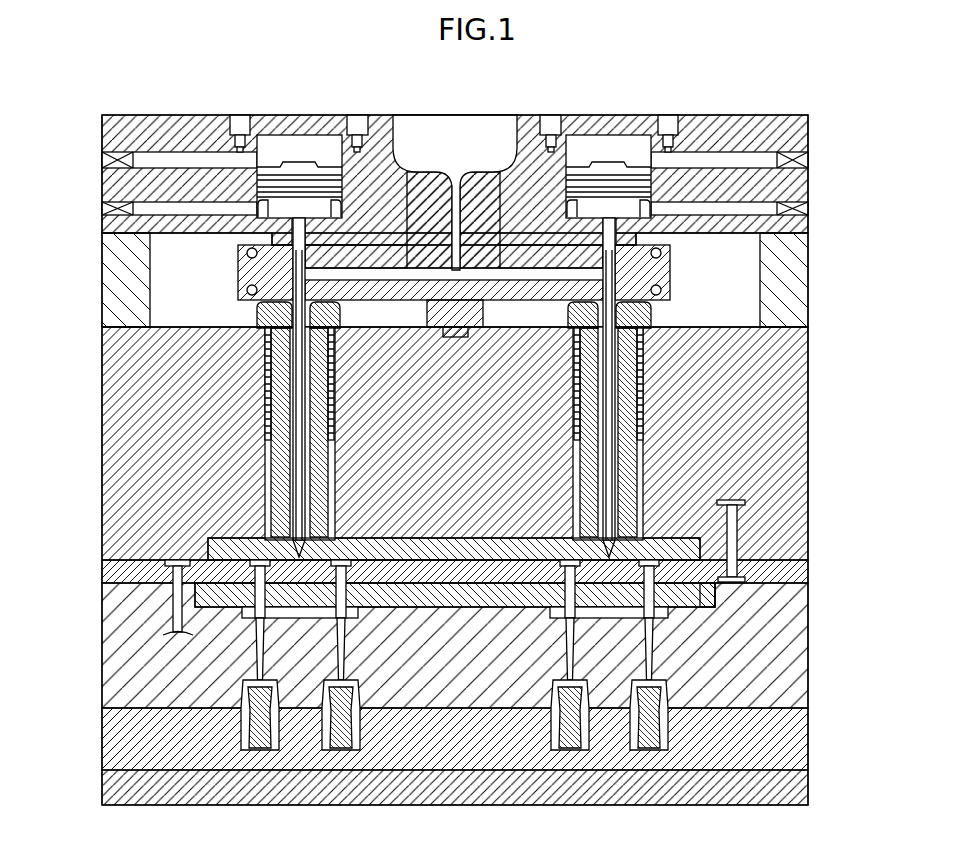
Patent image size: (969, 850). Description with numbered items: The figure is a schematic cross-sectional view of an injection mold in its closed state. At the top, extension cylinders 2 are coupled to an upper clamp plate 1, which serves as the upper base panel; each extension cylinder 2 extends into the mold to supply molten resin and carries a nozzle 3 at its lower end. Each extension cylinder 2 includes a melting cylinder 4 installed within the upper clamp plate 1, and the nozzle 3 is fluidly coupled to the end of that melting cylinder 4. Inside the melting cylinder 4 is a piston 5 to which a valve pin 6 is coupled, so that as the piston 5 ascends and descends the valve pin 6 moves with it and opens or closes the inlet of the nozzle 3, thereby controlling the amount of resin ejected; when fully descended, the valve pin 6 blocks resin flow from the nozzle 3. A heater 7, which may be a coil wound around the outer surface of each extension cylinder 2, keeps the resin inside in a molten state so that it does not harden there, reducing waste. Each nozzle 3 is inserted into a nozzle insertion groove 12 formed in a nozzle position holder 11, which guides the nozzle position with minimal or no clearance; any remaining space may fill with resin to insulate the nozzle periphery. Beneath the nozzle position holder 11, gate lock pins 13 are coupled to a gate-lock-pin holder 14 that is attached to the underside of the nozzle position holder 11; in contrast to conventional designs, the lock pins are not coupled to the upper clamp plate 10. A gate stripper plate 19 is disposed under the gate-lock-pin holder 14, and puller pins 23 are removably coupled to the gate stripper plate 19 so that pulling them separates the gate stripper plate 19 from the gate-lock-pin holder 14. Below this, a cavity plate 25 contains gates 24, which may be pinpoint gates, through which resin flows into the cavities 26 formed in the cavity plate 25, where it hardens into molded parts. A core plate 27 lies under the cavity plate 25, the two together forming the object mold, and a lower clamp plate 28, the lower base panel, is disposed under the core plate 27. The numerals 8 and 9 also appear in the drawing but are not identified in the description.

The upper clamp plate 1 is at (213, 130).
The extension cylinder 2 is at (645, 452).
The nozzle 3 is at (732, 483).
The melting cylinder 4 is at (318, 150).
The piston 5 is at (292, 165).
The valve pin 6 is at (272, 356).
The heater 7 is at (640, 352).
The hot runner manifold 8 is at (235, 258).
The left manifold block 9 is at (255, 280).
The upper clamp plate 10 is at (665, 250).
The nozzle position holder 11 is at (738, 540).
The nozzle insertion groove 12 is at (300, 548).
The gate lock pin 13 is at (255, 592).
The gate-lock-pin holder 14 is at (730, 572).
The gate stripper plate 19 is at (720, 600).
The puller pin 23 is at (200, 572).
The gate 24 is at (255, 635).
The cavity plate 25 is at (750, 650).
The cavity 26 is at (248, 683).
The core plate 27 is at (795, 752).
The lower clamp plate 28 is at (795, 795).